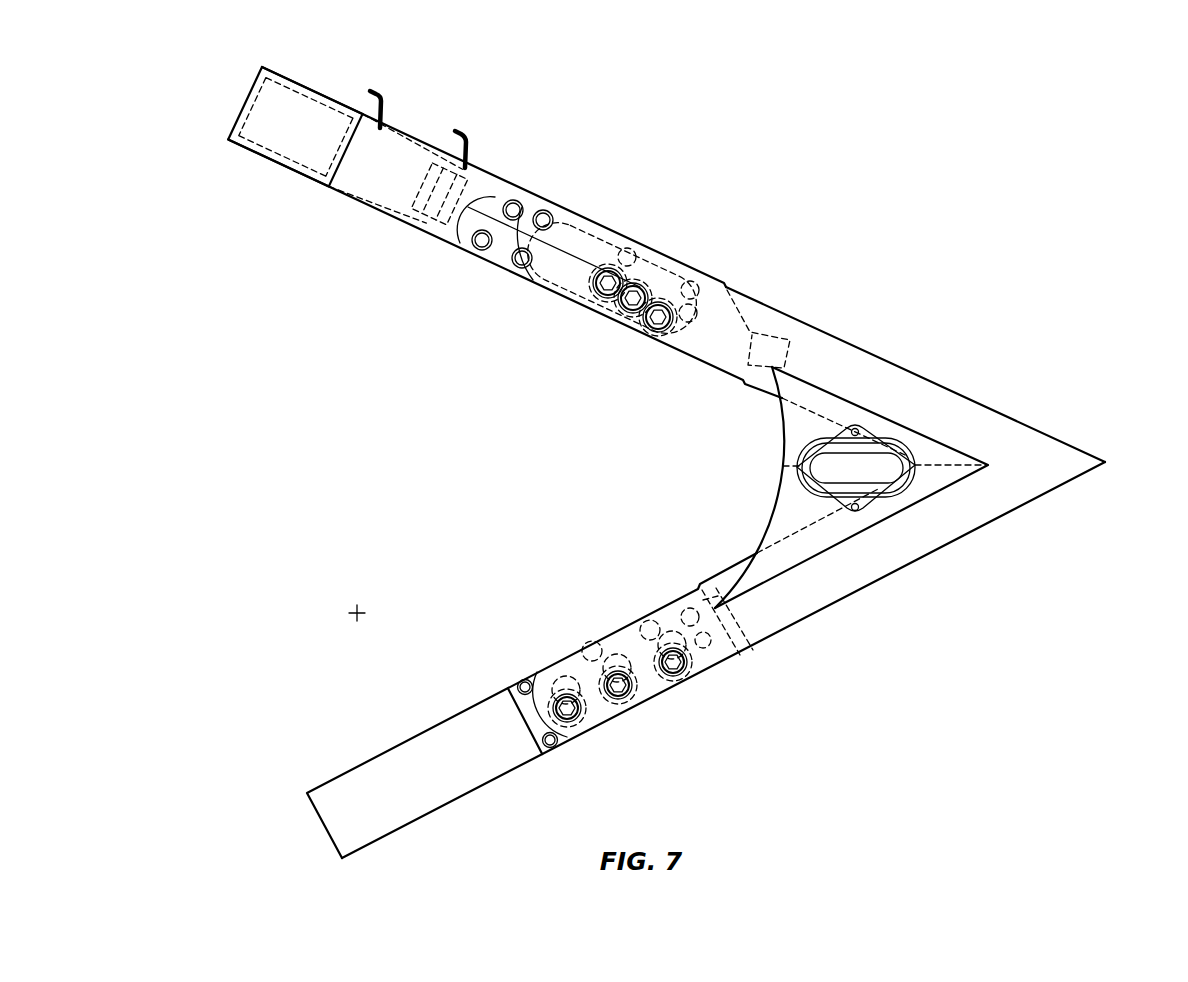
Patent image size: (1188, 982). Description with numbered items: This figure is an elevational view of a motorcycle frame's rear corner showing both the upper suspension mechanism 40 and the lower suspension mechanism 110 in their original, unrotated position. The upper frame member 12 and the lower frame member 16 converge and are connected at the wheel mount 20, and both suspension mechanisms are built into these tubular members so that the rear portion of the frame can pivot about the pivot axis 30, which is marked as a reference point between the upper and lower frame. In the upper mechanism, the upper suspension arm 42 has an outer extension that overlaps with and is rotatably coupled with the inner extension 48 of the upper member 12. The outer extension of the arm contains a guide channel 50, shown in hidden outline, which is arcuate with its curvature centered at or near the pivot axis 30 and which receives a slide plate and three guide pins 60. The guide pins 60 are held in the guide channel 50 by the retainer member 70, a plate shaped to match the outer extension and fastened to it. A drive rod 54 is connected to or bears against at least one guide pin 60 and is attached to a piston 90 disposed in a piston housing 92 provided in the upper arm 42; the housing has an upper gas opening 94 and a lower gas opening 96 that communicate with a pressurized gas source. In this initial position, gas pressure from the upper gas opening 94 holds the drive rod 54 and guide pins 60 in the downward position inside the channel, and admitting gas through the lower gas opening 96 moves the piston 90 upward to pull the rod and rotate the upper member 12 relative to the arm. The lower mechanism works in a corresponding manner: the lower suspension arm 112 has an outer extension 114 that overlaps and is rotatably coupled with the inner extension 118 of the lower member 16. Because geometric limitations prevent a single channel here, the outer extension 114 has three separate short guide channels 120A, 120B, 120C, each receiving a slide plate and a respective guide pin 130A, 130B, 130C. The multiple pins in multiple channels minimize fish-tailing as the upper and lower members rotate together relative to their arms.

The upper frame member 12 is at (912, 368).
The lower frame member 16 is at (920, 558).
The wheel mount 20 is at (1092, 446).
The pivot axis 30 is at (350, 618).
The upper suspension mechanism 40 is at (515, 229).
The upper suspension arm 42 is at (453, 236).
The inner extension 48 is at (708, 355).
The guide channel 50 is at (590, 226).
The drive rod 54 is at (497, 200).
The guide pins 60 is at (607, 300).
The retainer member 70 is at (500, 260).
The piston 90 is at (418, 212).
The piston housing 92 is at (358, 180).
The upper gas opening 94 is at (374, 90).
The lower gas opening 96 is at (457, 128).
The lower suspension mechanism 110 is at (629, 698).
The lower suspension arm 112 is at (435, 722).
The outer extension 114 is at (538, 672).
The inner extension 118 is at (725, 660).
The guide channel 120A is at (573, 658).
The guide channel 120B is at (617, 632).
The guide channel 120C is at (673, 603).
The guide pin 130A is at (555, 720).
The guide pin 130B is at (622, 700).
The guide pin 130C is at (676, 676).